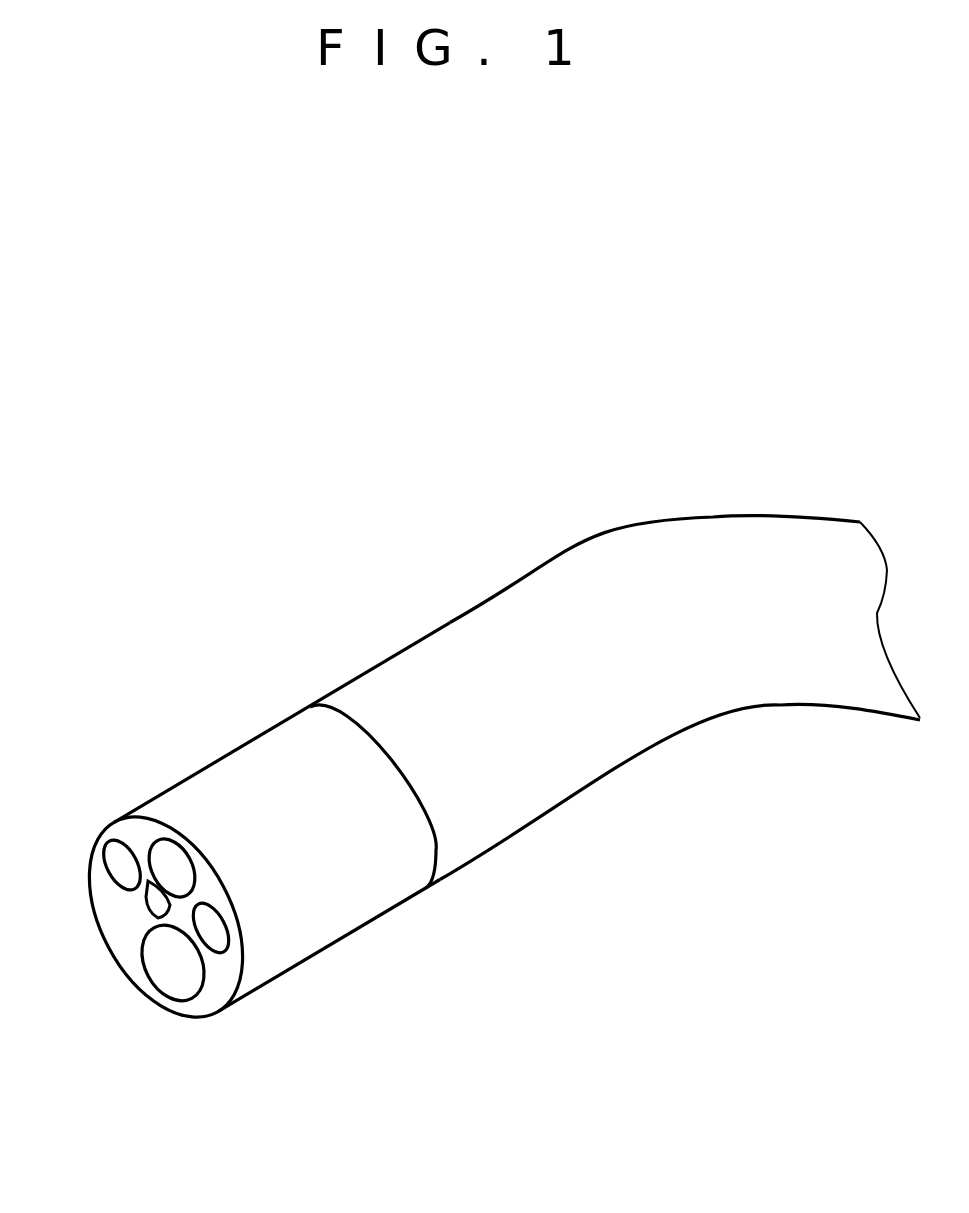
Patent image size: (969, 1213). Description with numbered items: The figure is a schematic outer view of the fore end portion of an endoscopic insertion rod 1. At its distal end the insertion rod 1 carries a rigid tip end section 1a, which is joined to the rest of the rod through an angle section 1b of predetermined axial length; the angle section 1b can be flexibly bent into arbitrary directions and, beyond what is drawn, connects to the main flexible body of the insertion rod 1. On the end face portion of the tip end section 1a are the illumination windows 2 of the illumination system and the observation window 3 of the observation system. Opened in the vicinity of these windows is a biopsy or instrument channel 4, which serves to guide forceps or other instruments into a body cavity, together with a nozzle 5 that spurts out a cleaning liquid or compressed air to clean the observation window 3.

The insertion rod 1 is at (548, 522).
The tip end section 1a is at (373, 875).
The angle section 1b is at (668, 715).
The illumination window 2 is at (126, 884).
The observation window 3 is at (168, 857).
The instrument channel 4 is at (177, 972).
The nozzle 5 is at (157, 907).